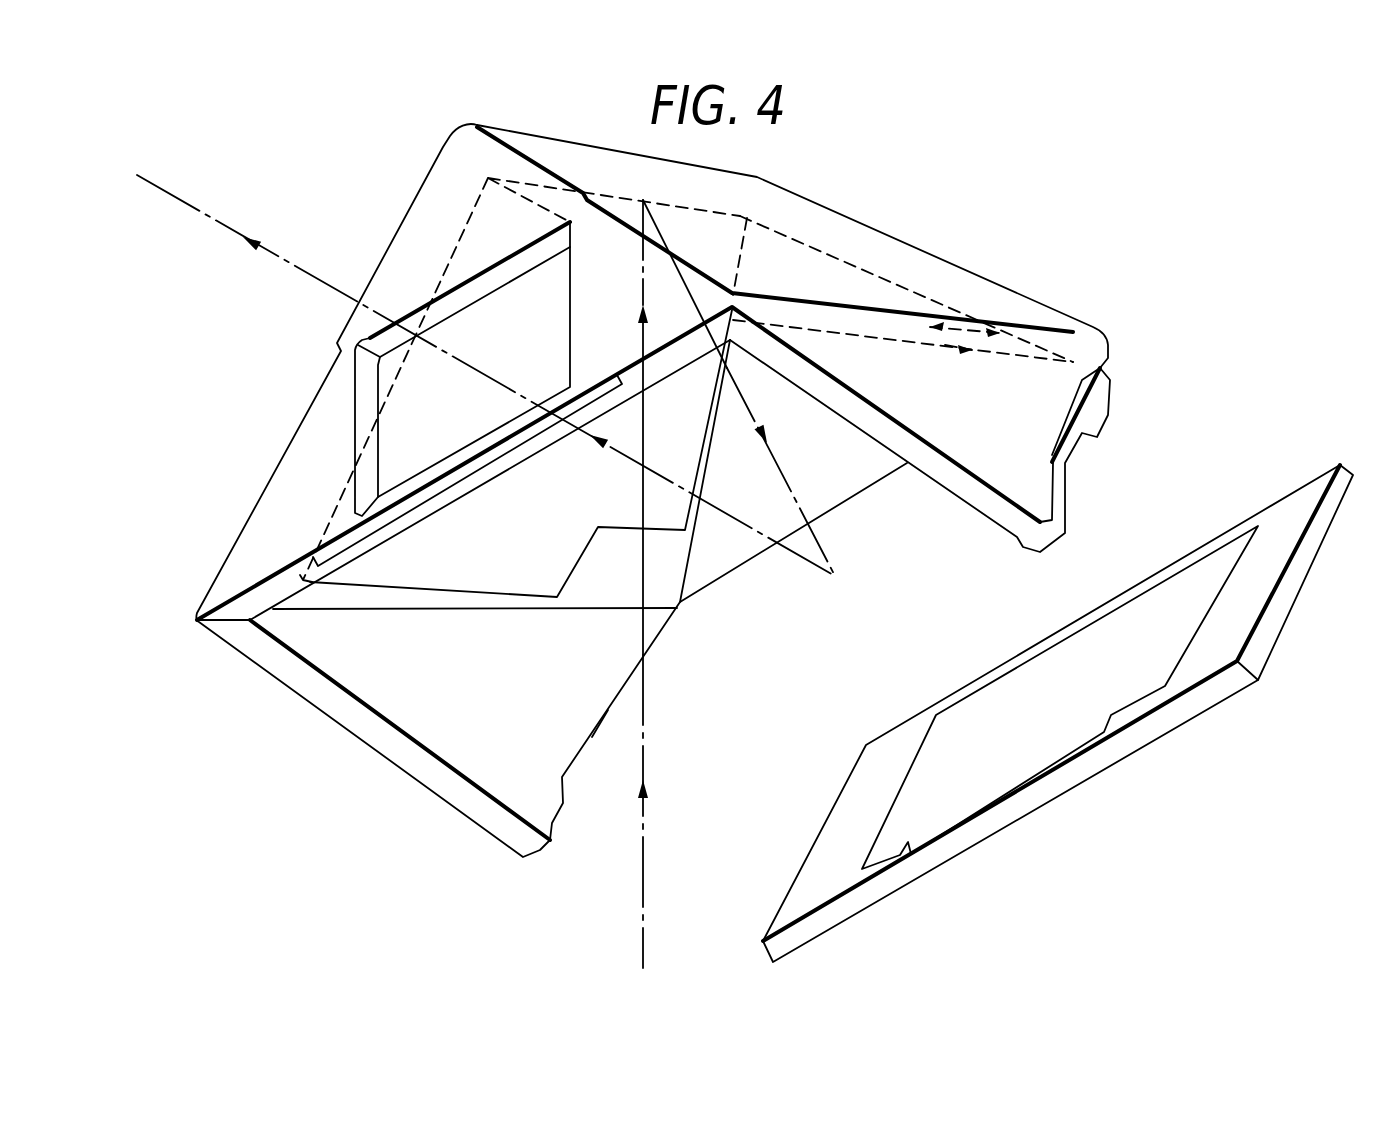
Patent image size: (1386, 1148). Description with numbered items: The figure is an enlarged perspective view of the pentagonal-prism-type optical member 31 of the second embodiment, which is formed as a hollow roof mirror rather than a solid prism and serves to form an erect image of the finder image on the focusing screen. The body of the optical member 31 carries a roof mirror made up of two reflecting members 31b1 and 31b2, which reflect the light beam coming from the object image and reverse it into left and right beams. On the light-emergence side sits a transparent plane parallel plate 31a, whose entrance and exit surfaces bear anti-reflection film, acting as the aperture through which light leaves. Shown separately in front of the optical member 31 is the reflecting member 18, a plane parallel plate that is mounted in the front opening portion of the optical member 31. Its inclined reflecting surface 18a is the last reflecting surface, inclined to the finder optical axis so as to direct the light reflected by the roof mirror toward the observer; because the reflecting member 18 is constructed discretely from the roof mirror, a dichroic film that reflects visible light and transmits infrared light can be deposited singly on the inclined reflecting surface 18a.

The optical member 31 is at (985, 265).
The transparent plane parallel plate 31a is at (353, 413).
The reflecting member 31b1 is at (815, 267).
The reflecting member 31b2 is at (425, 568).
The reflecting member 18 is at (1142, 745).
The inclined reflecting surface 18a is at (1165, 595).